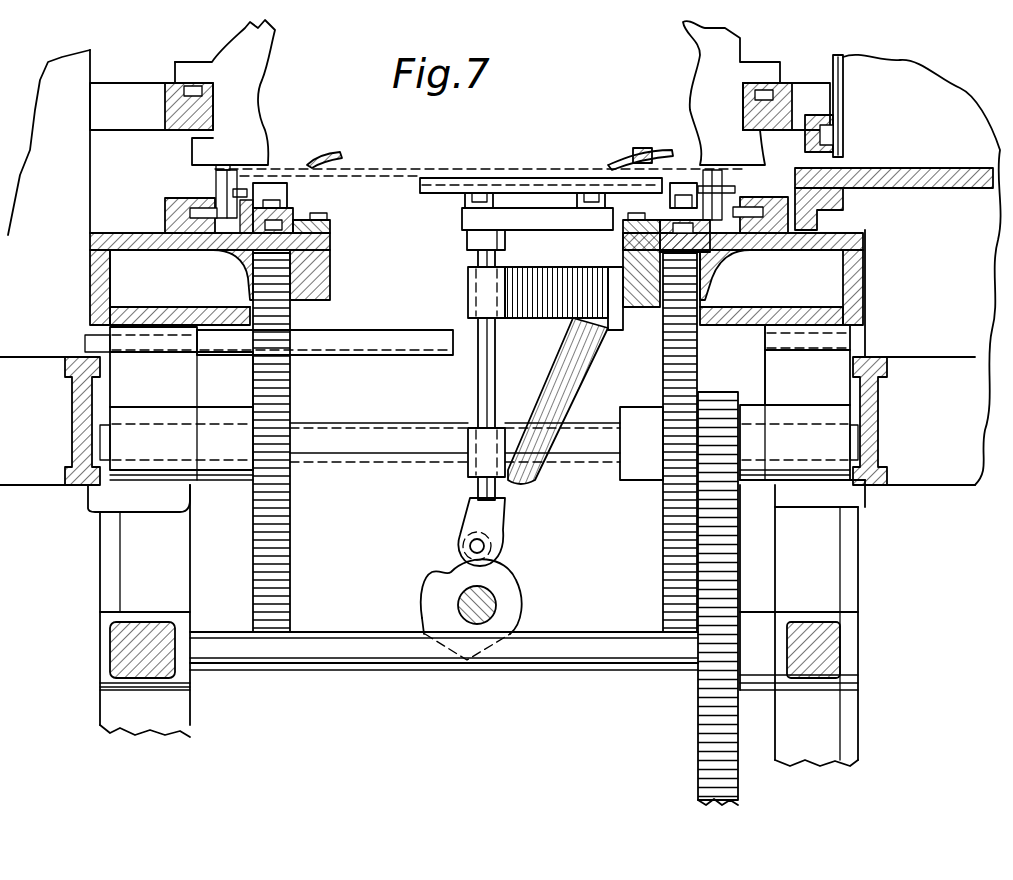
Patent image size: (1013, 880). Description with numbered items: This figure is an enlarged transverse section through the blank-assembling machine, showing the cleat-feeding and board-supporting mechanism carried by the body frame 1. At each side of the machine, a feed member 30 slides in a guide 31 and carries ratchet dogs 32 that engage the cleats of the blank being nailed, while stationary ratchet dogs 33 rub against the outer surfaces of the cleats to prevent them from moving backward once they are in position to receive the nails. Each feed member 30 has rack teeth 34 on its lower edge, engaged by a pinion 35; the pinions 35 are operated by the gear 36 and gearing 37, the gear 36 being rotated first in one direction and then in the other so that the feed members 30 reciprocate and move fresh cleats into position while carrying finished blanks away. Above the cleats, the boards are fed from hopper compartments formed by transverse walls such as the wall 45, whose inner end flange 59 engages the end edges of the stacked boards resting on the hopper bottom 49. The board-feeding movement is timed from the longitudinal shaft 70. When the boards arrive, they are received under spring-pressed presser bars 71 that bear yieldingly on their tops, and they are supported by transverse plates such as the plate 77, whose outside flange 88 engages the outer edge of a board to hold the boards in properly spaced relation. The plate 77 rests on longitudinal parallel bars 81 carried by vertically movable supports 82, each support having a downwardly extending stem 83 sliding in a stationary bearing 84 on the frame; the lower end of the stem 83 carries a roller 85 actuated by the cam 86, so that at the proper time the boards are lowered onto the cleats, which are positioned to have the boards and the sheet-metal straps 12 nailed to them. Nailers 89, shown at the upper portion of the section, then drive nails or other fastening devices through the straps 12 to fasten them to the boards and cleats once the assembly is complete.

The body frame 1 is at (68, 447).
The sheet-metal straps 12 is at (237, 166).
The parallel members 30 is at (283, 222).
The guides 31 is at (306, 236).
The ratchet dogs 32 is at (232, 193).
The stationary ratchet dogs 33 is at (186, 213).
The rack teeth 34 is at (246, 268).
The pinions 35 is at (284, 368).
The gear 36 is at (700, 718).
The gearing 37 is at (716, 393).
The wall 45 is at (916, 90).
The table or bottom 49 is at (926, 170).
The inner end flanges 59 is at (845, 66).
The shaft 70 is at (498, 603).
The presser bars 71 is at (326, 154).
The plate 77 is at (428, 190).
The parallel bars 81 is at (466, 212).
The vertically movable supports 82 is at (492, 233).
The stems 83 is at (480, 386).
The stationary bearings 84 is at (478, 288).
The rollers 85 is at (498, 554).
The cam 86 is at (420, 600).
The outside flanges 88 is at (503, 180).
The nailers 89 is at (252, 80).